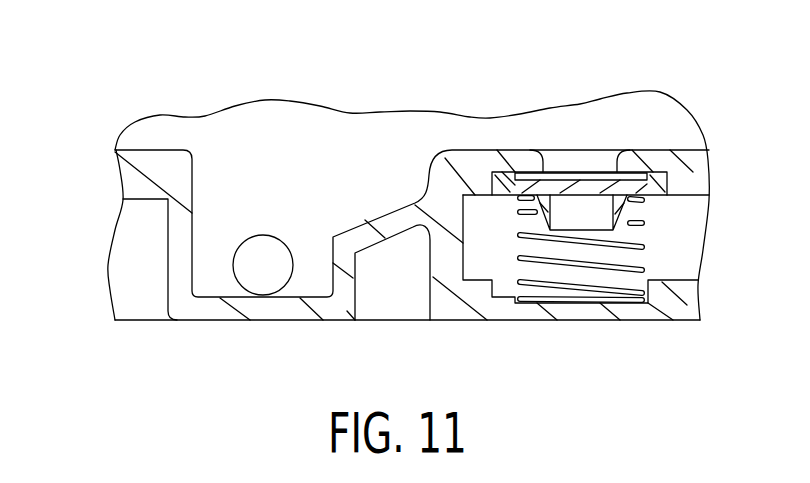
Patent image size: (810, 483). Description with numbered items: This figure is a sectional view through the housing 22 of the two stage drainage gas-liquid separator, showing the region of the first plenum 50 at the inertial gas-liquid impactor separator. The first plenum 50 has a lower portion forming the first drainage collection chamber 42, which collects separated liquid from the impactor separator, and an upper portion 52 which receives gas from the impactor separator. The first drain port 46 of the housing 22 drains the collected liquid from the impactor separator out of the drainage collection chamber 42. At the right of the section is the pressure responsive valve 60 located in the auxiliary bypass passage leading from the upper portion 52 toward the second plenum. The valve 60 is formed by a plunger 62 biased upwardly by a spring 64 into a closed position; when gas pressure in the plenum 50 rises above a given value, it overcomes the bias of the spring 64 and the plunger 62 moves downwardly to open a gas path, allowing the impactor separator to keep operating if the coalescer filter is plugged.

The housing 22 is at (113, 172).
The first drainage collection chamber 42 is at (205, 247).
The first drain port 46 is at (262, 277).
The first plenum 50 is at (312, 137).
The upper portion 52 is at (477, 130).
The pressure responsive valve 60 is at (593, 158).
The plunger 62 is at (612, 186).
The spring 64 is at (640, 243).